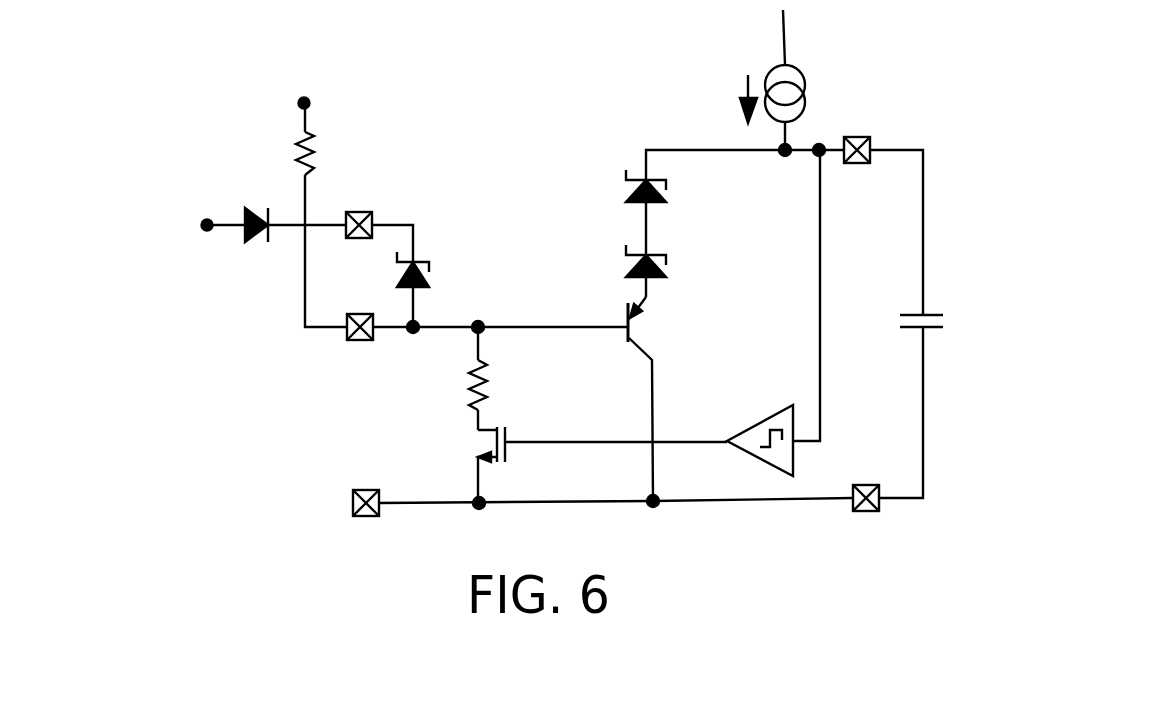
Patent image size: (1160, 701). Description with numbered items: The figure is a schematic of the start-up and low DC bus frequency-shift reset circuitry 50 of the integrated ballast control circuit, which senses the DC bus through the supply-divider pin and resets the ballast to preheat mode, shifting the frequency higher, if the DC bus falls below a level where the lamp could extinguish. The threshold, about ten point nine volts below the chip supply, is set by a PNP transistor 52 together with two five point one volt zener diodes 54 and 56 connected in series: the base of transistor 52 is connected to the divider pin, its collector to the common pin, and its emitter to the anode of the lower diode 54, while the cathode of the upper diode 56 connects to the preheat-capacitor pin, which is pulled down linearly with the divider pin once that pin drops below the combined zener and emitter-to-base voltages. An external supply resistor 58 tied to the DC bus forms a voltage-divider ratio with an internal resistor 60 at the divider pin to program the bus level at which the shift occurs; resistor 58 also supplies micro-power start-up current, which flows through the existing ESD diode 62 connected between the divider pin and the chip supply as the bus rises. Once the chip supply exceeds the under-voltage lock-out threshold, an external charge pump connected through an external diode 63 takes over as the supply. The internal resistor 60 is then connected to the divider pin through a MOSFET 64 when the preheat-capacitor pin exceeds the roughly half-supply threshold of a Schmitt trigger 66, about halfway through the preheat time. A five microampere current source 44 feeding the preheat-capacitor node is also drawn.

The current source 44 is at (805, 115).
The start-up and low DC bus frequency-shift reset circuitry 50 is at (588, 62).
The PNP transistor 52 is at (643, 344).
The zener diode 54 is at (632, 266).
The zener diode 56 is at (630, 192).
The external resistor 58 is at (296, 135).
The internal resistor 60 is at (473, 373).
The ESD diode 62 is at (418, 259).
The external diode 63 is at (258, 241).
The MOSFET 64 is at (602, 465).
The Schmitt trigger 66 is at (765, 412).